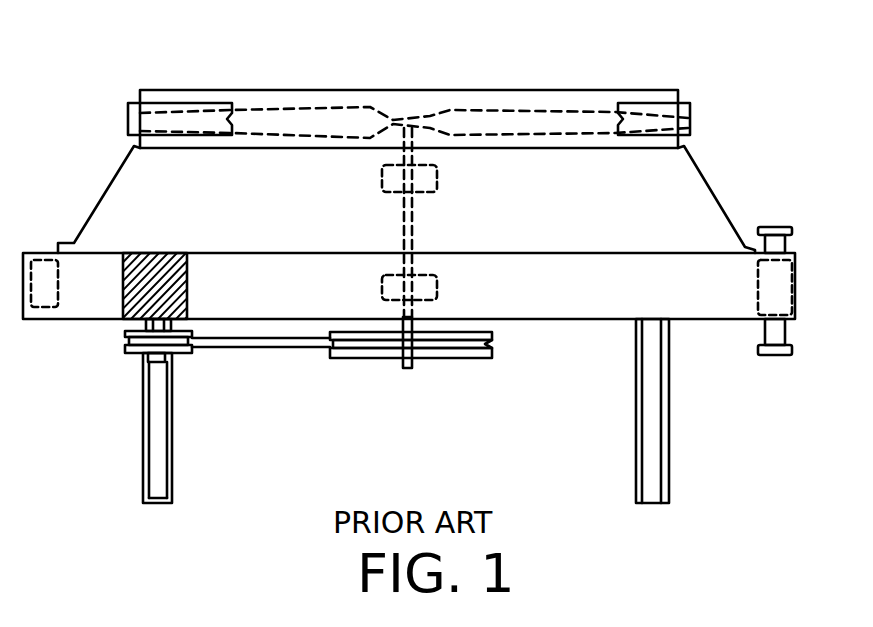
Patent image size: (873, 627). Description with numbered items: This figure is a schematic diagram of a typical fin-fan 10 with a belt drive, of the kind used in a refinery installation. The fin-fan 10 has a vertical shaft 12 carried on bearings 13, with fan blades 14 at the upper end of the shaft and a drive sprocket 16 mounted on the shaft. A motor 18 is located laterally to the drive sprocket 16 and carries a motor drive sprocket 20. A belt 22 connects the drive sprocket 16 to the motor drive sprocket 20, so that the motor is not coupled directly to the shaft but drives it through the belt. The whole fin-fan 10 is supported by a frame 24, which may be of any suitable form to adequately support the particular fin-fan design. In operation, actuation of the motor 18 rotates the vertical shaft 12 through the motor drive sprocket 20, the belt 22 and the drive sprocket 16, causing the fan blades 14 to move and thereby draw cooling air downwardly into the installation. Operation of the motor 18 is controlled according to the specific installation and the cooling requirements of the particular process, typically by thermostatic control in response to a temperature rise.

The fin-fan 10 is at (630, 68).
The vertical shaft 12 is at (413, 143).
The bearings 13 is at (440, 180).
The fan blades 14 is at (495, 125).
The drive sprocket 16 is at (443, 358).
The motor 18 is at (123, 320).
The motor drive sprocket 20 is at (137, 357).
The belt 22 is at (248, 348).
The frame 24 is at (142, 477).